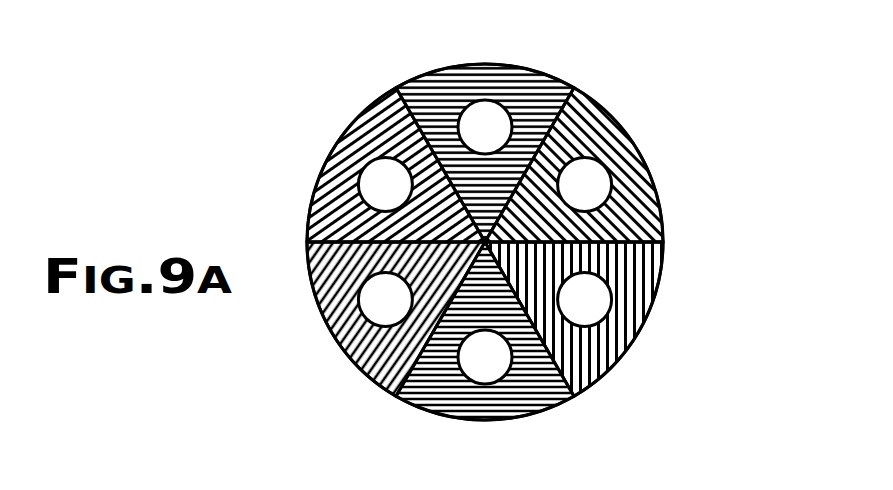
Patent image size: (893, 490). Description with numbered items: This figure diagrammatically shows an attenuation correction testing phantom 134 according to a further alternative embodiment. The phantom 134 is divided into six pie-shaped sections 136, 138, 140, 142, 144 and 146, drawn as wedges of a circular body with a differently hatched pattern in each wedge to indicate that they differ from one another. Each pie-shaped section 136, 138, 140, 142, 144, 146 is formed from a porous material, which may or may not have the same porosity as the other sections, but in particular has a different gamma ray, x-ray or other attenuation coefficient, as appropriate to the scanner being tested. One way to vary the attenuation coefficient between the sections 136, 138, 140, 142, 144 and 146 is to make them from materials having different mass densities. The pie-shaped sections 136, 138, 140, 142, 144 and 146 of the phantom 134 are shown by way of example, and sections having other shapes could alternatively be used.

The attenuation correction testing phantom 134 is at (262, 184).
The pie-shaped section 136 is at (455, 65).
The pie-shaped section 138 is at (620, 130).
The pie-shaped section 140 is at (633, 347).
The pie-shaped section 142 is at (502, 417).
The pie-shaped section 144 is at (347, 358).
The pie-shaped section 146 is at (340, 132).